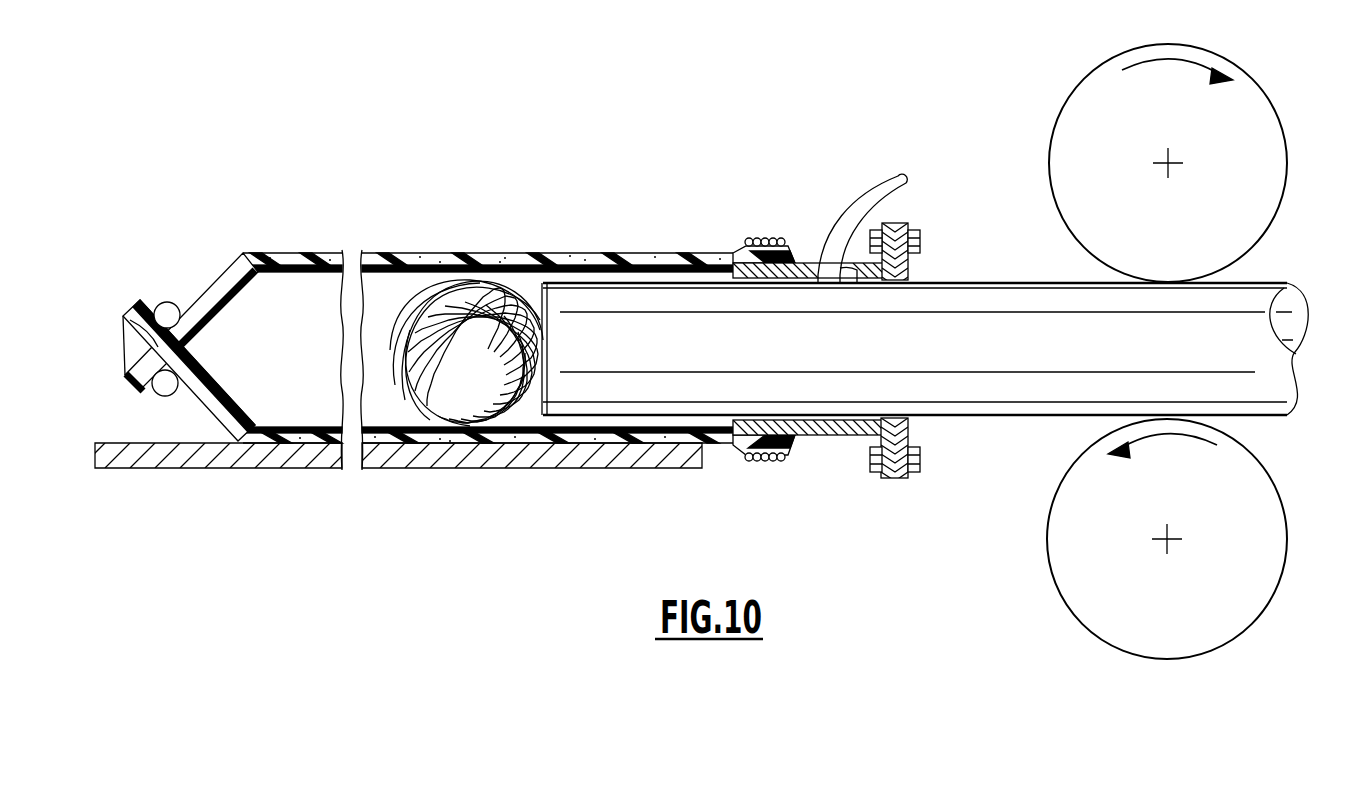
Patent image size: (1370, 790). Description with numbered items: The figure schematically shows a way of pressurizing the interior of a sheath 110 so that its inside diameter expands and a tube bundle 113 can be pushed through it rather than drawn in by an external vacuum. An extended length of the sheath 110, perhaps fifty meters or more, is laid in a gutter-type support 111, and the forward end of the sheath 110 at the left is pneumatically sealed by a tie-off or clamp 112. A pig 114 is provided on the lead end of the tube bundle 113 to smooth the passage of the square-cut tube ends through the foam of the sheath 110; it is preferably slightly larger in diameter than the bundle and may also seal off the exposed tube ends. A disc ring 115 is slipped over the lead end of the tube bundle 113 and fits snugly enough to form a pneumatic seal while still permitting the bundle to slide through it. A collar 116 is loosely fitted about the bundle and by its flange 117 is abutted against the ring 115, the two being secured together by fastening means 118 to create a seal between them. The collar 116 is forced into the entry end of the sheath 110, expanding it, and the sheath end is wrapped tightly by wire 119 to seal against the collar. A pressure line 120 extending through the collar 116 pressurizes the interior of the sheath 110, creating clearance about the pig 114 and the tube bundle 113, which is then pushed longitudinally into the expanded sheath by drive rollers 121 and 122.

The sheath 110 is at (490, 253).
The gutter-type support 111 is at (550, 466).
The clamp 112 is at (165, 302).
The tube bundle 113 is at (603, 300).
The pig 114 is at (480, 290).
The disc ring 115 is at (907, 276).
The collar 116 is at (857, 272).
The flange 117 is at (897, 227).
The fastening means 118 is at (917, 243).
The wire 119 is at (763, 239).
The pressure line 120 is at (860, 190).
The drive roller 121 is at (1262, 116).
The drive roller 122 is at (1258, 490).